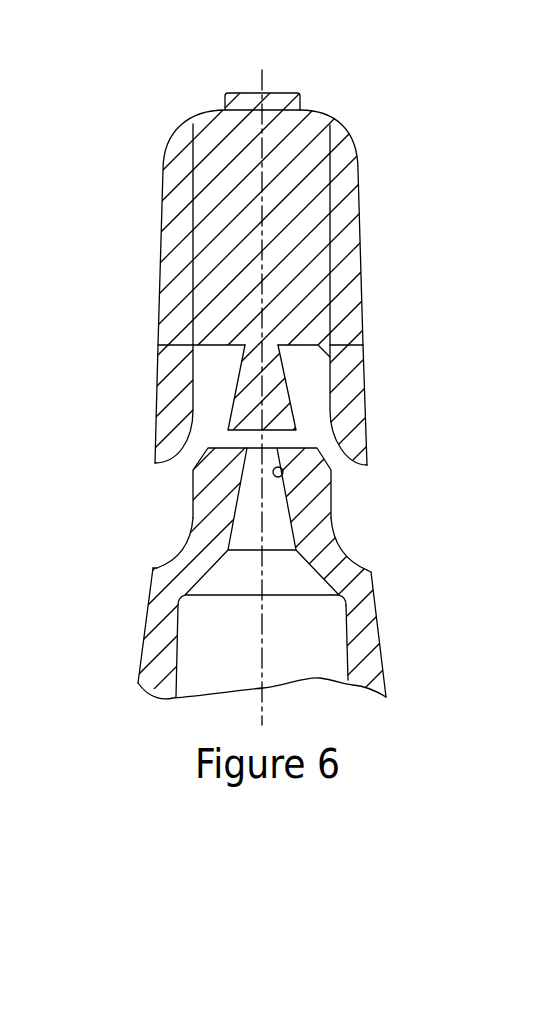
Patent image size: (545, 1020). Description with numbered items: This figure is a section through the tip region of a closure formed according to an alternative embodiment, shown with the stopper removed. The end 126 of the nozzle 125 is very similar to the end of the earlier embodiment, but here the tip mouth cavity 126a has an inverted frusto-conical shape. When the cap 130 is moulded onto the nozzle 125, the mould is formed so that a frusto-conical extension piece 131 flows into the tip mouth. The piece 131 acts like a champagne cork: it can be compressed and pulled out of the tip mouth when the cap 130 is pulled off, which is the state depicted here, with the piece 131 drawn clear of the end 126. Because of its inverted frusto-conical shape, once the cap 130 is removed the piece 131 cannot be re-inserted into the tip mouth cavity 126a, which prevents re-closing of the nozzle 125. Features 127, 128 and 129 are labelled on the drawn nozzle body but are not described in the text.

The nozzle 125 is at (428, 643).
The end 126 is at (147, 615).
The tip mouth cavity 126a is at (283, 466).
The shoulder step 127 is at (160, 568).
The tapered shoulder 128 is at (193, 531).
The neck portion 129 is at (193, 494).
The cap 130 is at (160, 247).
The frusto-conical extension piece 131 is at (247, 92).